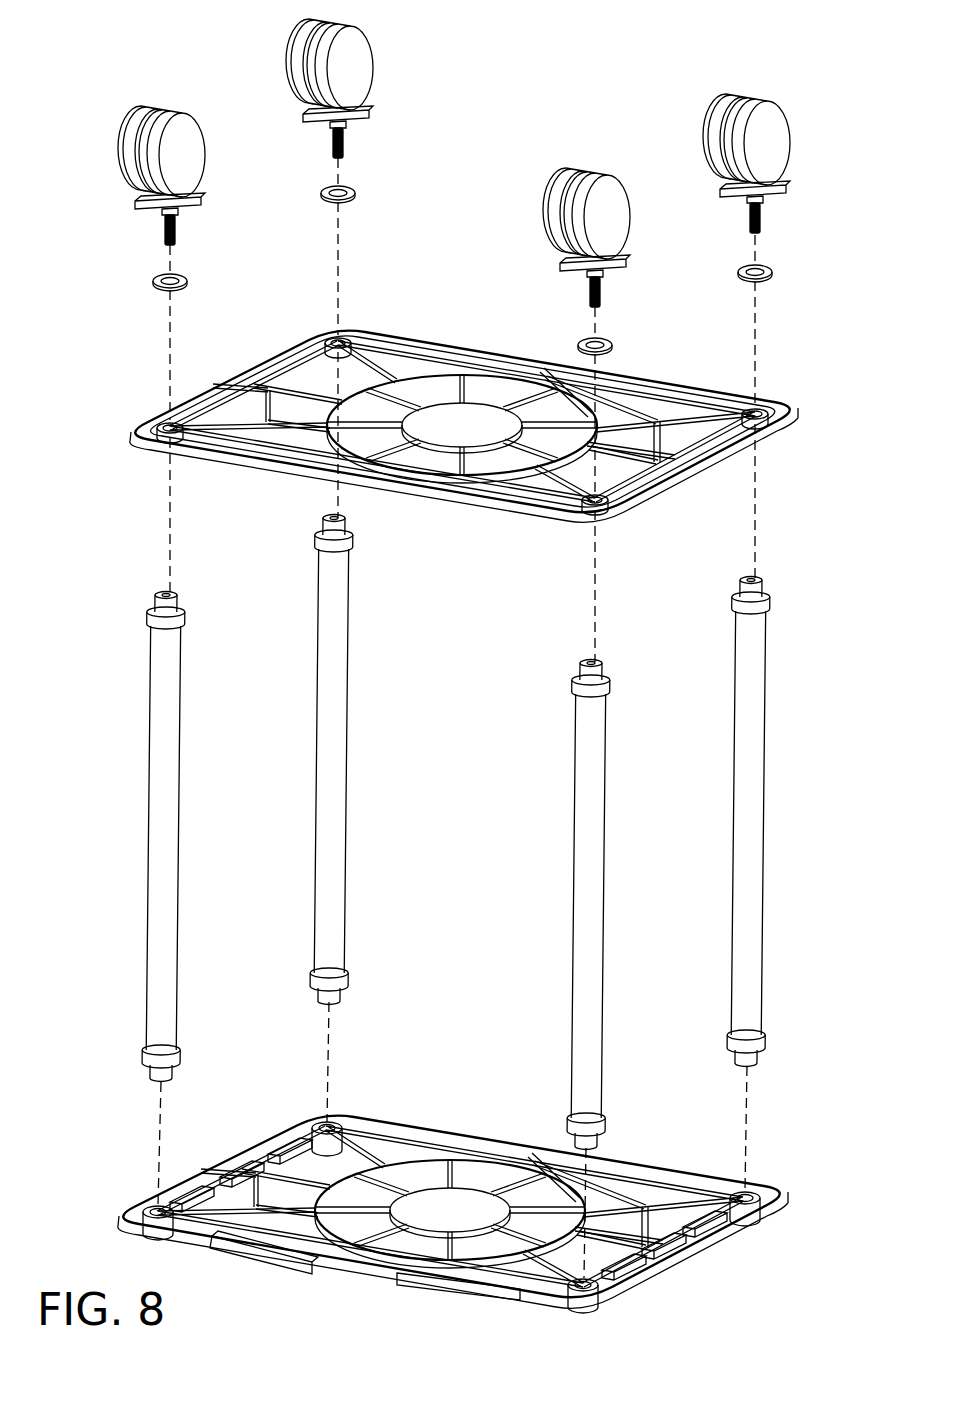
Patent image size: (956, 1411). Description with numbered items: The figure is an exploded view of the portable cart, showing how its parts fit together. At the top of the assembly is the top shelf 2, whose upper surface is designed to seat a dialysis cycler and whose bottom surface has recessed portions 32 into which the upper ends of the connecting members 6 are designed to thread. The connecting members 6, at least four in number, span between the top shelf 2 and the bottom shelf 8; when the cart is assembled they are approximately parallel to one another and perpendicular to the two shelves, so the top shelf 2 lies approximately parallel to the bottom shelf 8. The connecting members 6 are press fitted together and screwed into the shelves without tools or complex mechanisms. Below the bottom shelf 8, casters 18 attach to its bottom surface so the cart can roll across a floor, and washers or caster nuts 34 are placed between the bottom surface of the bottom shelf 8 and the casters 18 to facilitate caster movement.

The top shelf 2 is at (475, 1140).
The connecting members 6 is at (180, 786).
The bottom shelf 8 is at (660, 495).
The casters 18 is at (720, 120).
The recessed portions 32 is at (333, 1122).
The washers or caster nuts 34 is at (578, 343).